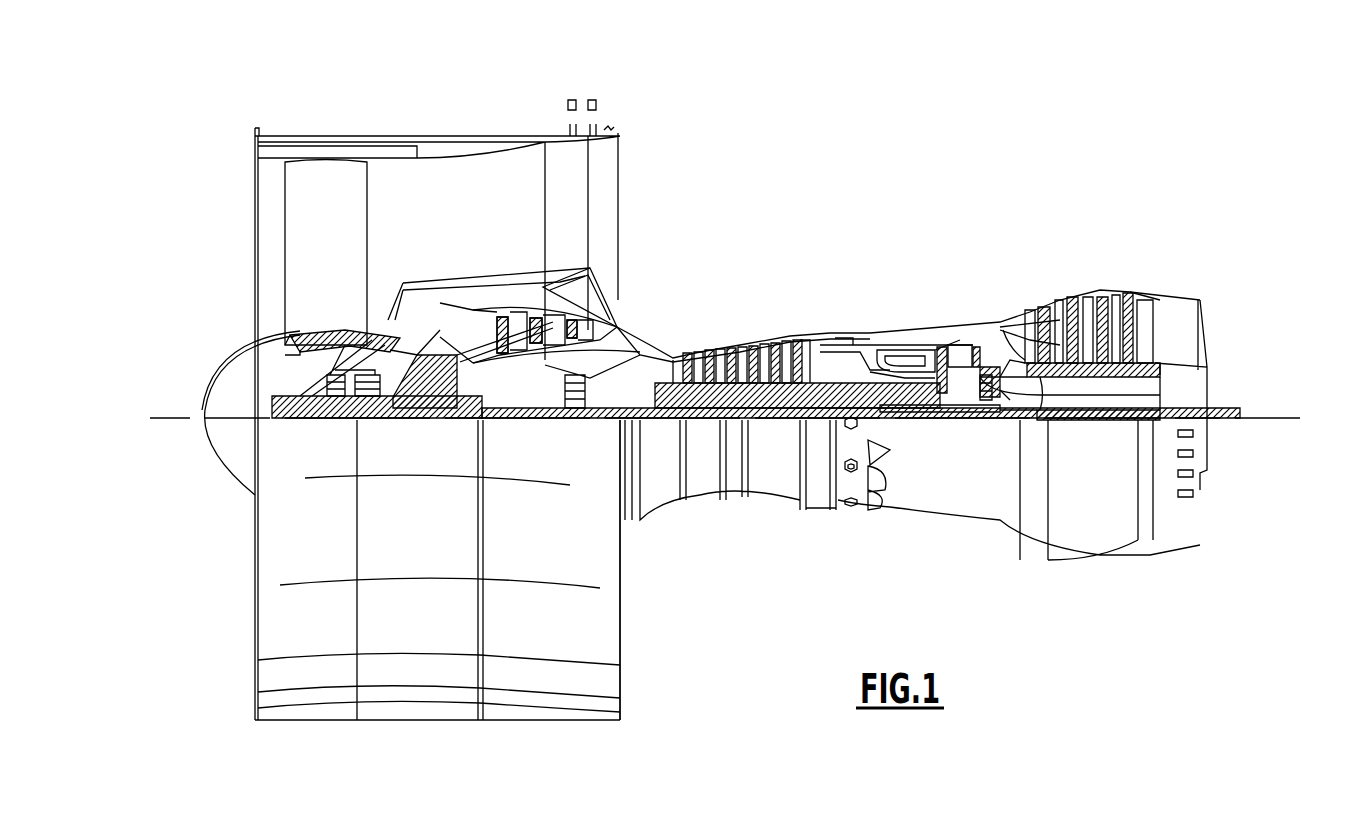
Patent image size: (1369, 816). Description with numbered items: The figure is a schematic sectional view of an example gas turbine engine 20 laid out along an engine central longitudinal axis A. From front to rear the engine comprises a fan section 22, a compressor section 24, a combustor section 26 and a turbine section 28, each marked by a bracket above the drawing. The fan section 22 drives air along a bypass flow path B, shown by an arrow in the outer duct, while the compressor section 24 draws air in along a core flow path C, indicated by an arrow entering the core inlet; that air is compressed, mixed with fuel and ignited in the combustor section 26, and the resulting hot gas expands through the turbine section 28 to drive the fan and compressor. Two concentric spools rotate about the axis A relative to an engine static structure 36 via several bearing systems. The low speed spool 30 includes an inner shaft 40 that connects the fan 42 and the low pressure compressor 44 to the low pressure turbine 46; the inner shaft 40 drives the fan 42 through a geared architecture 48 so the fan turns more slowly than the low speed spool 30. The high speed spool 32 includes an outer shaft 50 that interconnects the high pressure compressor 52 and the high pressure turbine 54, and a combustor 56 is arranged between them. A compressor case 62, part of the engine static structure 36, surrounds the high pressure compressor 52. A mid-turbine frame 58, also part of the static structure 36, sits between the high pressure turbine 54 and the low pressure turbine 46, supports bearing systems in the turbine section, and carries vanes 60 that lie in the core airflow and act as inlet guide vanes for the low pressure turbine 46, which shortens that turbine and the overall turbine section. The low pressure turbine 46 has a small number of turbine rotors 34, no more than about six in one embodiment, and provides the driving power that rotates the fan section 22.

The gas turbine engine 20 is at (900, 185).
The fan section 22 is at (465, 108).
The compressor section 24 is at (480, 256).
The combustor section 26 is at (925, 256).
The turbine section 28 is at (1150, 256).
The low speed spool 30 is at (775, 428).
The high speed spool 32 is at (820, 367).
The turbine rotors 34 is at (1087, 387).
The engine static structure 36 is at (818, 512).
The inner shaft 40 is at (640, 422).
The fan 42 is at (340, 264).
The low pressure compressor section 44 is at (553, 320).
The low pressure turbine section 46 is at (1087, 313).
The geared architecture 48 is at (445, 400).
The outer shaft 50 is at (887, 393).
The high pressure compressor section 52 is at (753, 393).
The high pressure turbine section 54 is at (953, 347).
The combustor 56 is at (893, 363).
The mid-turbine frame 58 is at (1003, 328).
The vanes 60 is at (1023, 390).
The compressor case 62 is at (783, 347).
The engine central longitudinal axis A is at (1288, 417).
The bypass flow path B is at (488, 210).
The core flow path C is at (435, 320).